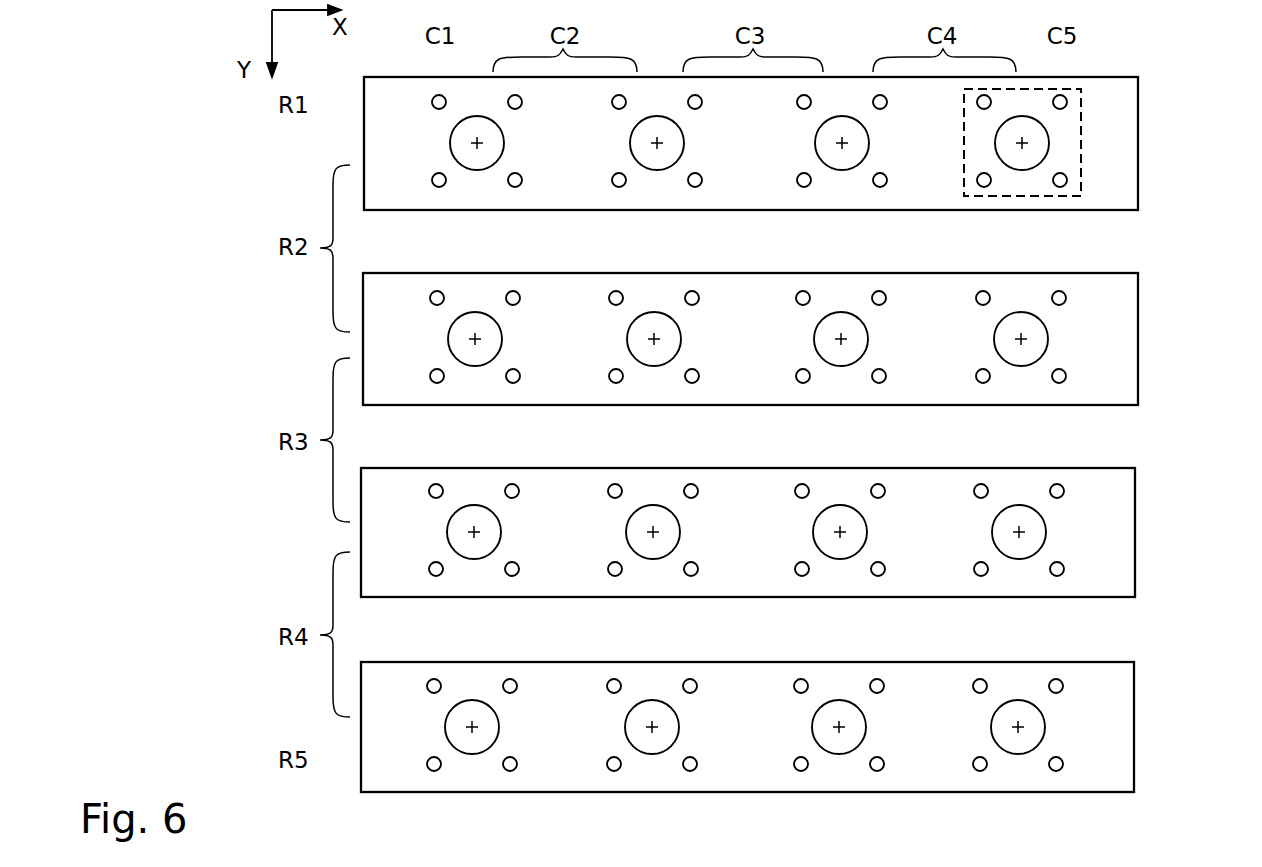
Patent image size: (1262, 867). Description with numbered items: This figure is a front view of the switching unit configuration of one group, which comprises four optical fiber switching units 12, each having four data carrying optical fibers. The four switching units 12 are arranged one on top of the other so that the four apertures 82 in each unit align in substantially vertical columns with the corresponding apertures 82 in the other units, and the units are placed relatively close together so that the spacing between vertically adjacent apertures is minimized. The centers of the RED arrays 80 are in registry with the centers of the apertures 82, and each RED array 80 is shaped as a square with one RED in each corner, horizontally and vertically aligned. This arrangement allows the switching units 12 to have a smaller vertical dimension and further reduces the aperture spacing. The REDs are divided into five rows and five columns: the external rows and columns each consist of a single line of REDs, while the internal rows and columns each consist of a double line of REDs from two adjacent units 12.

The optical fiber switching unit 12 is at (1130, 211).
The RED array 80 is at (1083, 102).
The aperture 82 is at (1048, 149).